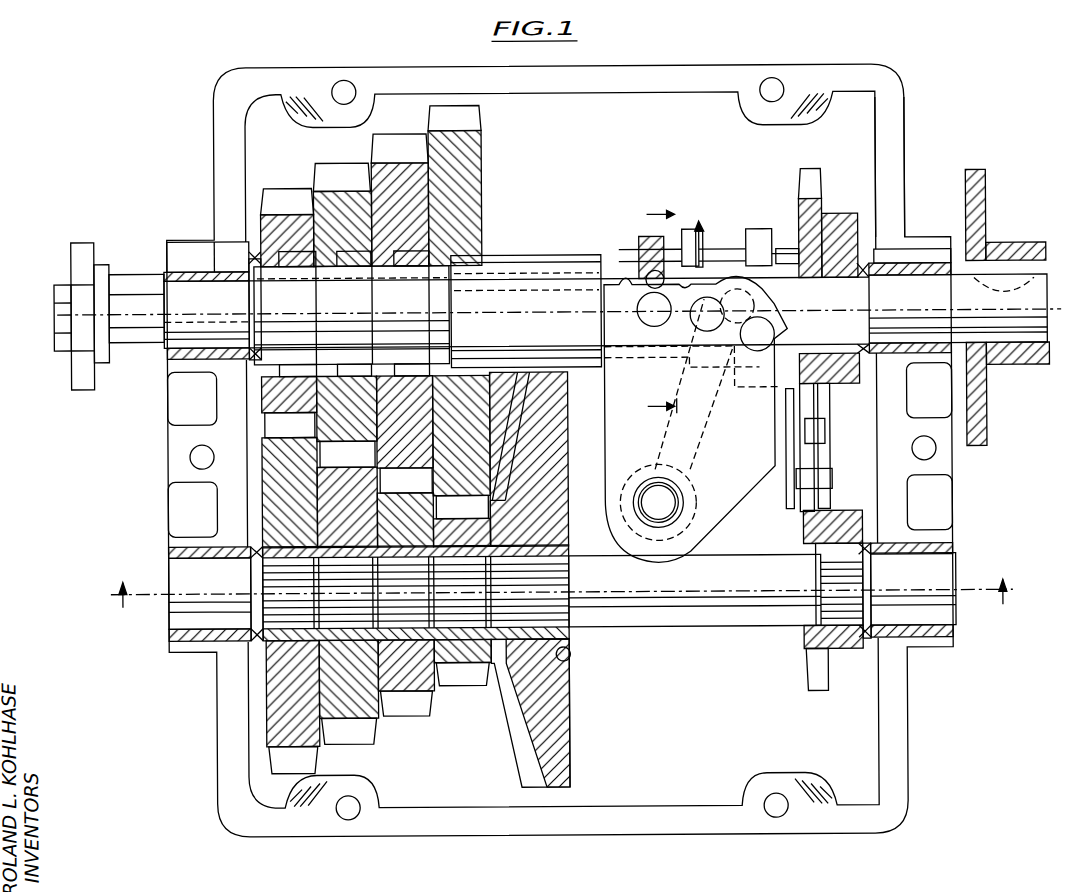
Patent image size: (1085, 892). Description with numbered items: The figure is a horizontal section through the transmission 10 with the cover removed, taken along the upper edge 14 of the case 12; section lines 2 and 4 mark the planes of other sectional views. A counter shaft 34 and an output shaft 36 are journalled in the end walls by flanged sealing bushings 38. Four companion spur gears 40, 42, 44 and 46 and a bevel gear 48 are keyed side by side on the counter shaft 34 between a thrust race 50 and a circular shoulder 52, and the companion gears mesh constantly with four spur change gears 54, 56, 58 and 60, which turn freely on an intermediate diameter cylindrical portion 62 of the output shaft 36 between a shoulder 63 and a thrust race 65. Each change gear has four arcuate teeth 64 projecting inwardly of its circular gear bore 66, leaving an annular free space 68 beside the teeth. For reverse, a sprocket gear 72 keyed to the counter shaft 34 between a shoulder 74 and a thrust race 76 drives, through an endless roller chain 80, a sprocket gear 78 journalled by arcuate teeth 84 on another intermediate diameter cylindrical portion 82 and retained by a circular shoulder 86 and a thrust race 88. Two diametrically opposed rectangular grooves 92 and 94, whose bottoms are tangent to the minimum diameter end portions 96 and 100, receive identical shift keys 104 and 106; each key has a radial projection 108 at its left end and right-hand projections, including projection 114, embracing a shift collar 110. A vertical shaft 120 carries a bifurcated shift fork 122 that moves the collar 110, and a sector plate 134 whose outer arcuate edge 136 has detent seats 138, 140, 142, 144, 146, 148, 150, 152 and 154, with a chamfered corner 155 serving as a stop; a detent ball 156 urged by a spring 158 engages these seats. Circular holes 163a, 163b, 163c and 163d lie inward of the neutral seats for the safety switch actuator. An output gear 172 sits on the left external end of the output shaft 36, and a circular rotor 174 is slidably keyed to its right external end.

The transmission 10 is at (905, 72).
The case 12 is at (910, 113).
The upper edge 14 is at (893, 153).
The section line 2- 2 is at (560, 605).
The section line 4- 4 is at (651, 305).
The counter shaft 34 is at (655, 637).
The output shaft 36 is at (577, 262).
The flanged sealing bushings 38 is at (247, 240).
The companion spur gear 40 is at (310, 760).
The companion spur gear 42 is at (370, 735).
The companion spur gear 44 is at (425, 708).
The companion spur gear 46 is at (478, 680).
The bevel gear 48 is at (570, 762).
The thrust race 50 is at (258, 645).
The circular shoulder 52 is at (570, 655).
The spur change gear 54 is at (287, 187).
The spur change gear 56 is at (345, 163).
The spur change gear 58 is at (400, 138).
The spur change gear 60 is at (484, 118).
The intermediate diameter cylindrical portion 62 is at (468, 262).
The shoulder 63 is at (440, 282).
The arcuately extending teeth 64 is at (272, 363).
The thrust race 65 is at (250, 375).
The circular gear bores 66 is at (283, 262).
The annular free space 68 is at (305, 363).
The sprocket gear 72 is at (807, 690).
The shoulder 74 is at (805, 645).
The thrust race 76 is at (866, 645).
The sprocket gear 78 is at (805, 170).
The endless roller chain 80 is at (838, 492).
The intermediate diameter cylindrical portion 82 is at (822, 250).
The arcuate teeth 84 is at (850, 214).
The circular shoulder 86 is at (805, 262).
The thrust race 88 is at (895, 262).
The rectangular groove 92 is at (572, 280).
The rectangular groove 94 is at (600, 392).
The minimum diameter end portion 96 is at (187, 290).
The minimum diameter end portion 100 is at (1020, 335).
The shift key 104 is at (562, 253).
The shift key 106 is at (565, 380).
The radial projection 108 is at (547, 311).
The shift collar 110 is at (700, 262).
The projection 114 is at (837, 266).
The vertical shaft 120 is at (655, 510).
The bifurcated shift fork 122 is at (676, 384).
The sector plate 134 is at (725, 520).
The outer arcuate edge 136 is at (703, 290).
The detent seat 138 is at (610, 290).
The detent seat 140 is at (655, 282).
The detent seat 142 is at (700, 232).
The detent seat 144 is at (740, 298).
The detent seat 146 is at (748, 298).
The detent seat 148 is at (795, 318).
The detent seat 150 is at (800, 340).
The detent seat 152 is at (872, 310).
The detent seat 154 is at (880, 382).
The chamfered corner 155 is at (860, 429).
The detent ball 156 is at (643, 250).
The spring 158 is at (653, 268).
The circular hole 163a is at (648, 322).
The circular hole 163b is at (703, 325).
The circular hole 163c is at (755, 350).
The circular hole 163d is at (734, 457).
The output gear 172 is at (86, 248).
The circular rotor 174 is at (990, 205).